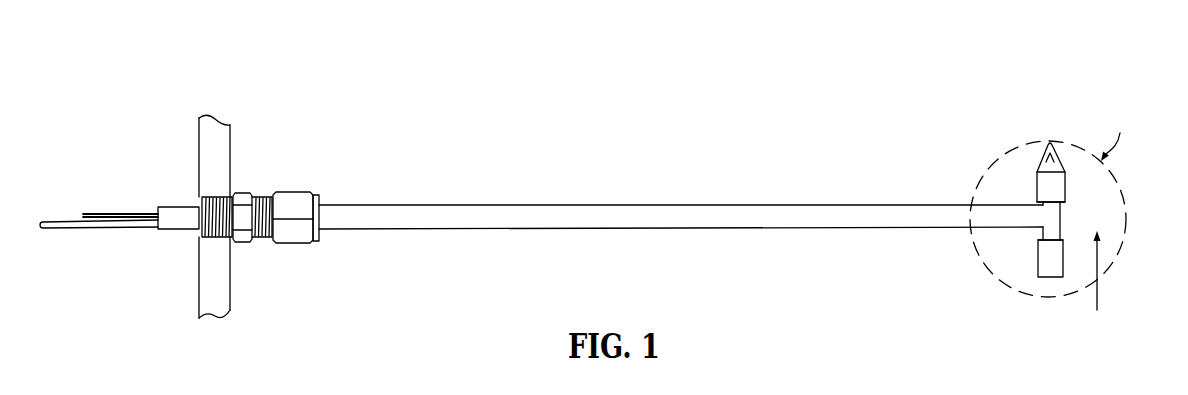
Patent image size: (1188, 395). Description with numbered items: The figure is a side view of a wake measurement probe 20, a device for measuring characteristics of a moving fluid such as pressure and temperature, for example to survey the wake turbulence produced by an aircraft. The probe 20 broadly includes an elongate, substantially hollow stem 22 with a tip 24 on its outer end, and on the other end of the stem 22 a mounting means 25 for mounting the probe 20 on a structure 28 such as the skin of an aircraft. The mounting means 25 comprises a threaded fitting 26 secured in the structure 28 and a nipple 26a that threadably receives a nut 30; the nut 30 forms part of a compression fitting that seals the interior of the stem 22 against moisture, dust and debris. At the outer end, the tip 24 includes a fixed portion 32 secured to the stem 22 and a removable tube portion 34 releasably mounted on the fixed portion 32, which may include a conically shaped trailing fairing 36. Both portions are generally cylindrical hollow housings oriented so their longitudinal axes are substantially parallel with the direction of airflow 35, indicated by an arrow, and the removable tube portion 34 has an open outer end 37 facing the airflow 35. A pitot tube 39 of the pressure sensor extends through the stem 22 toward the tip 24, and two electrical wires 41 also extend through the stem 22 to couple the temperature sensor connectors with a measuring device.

The probe 20 is at (478, 100).
The stem 22 is at (658, 217).
The tip 24 is at (992, 136).
The mounting means 25 is at (293, 160).
The threaded fitting 26 is at (217, 223).
The nipple 26a is at (261, 180).
The structure 28 is at (213, 148).
The nut 30 is at (292, 235).
The fixed portion 32 is at (1055, 222).
The removable tube portion 34 is at (1047, 290).
The airflow 35 is at (1098, 282).
The trailing fairing 36 is at (1053, 143).
The open outer end 37 is at (1048, 260).
The pitot tube 39 is at (78, 229).
The electrical wires 41 is at (110, 212).